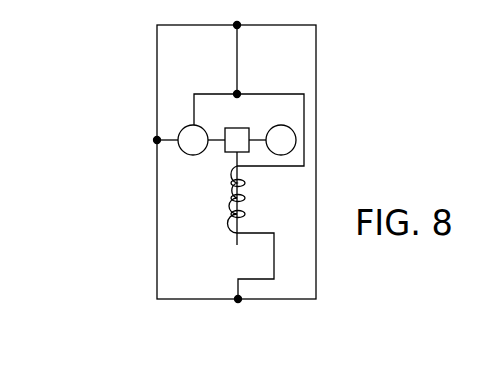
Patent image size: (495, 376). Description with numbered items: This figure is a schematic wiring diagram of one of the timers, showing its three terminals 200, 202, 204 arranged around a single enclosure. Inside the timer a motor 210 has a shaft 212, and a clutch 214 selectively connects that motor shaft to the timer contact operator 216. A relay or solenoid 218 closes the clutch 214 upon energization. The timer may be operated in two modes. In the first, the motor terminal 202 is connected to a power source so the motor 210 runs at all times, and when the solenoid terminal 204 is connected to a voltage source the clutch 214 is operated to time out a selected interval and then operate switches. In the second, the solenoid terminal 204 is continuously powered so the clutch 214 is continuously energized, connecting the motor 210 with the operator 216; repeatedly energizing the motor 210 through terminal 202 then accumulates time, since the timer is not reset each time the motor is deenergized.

The terminal 200 is at (237, 28).
The motor terminal 202 is at (157, 140).
The solenoid terminal 204 is at (238, 299).
The motor 210 is at (199, 126).
The shaft 212 is at (262, 133).
The clutch 214 is at (228, 150).
The timer contact operator 216 is at (296, 141).
The relay or solenoid 218 is at (244, 199).